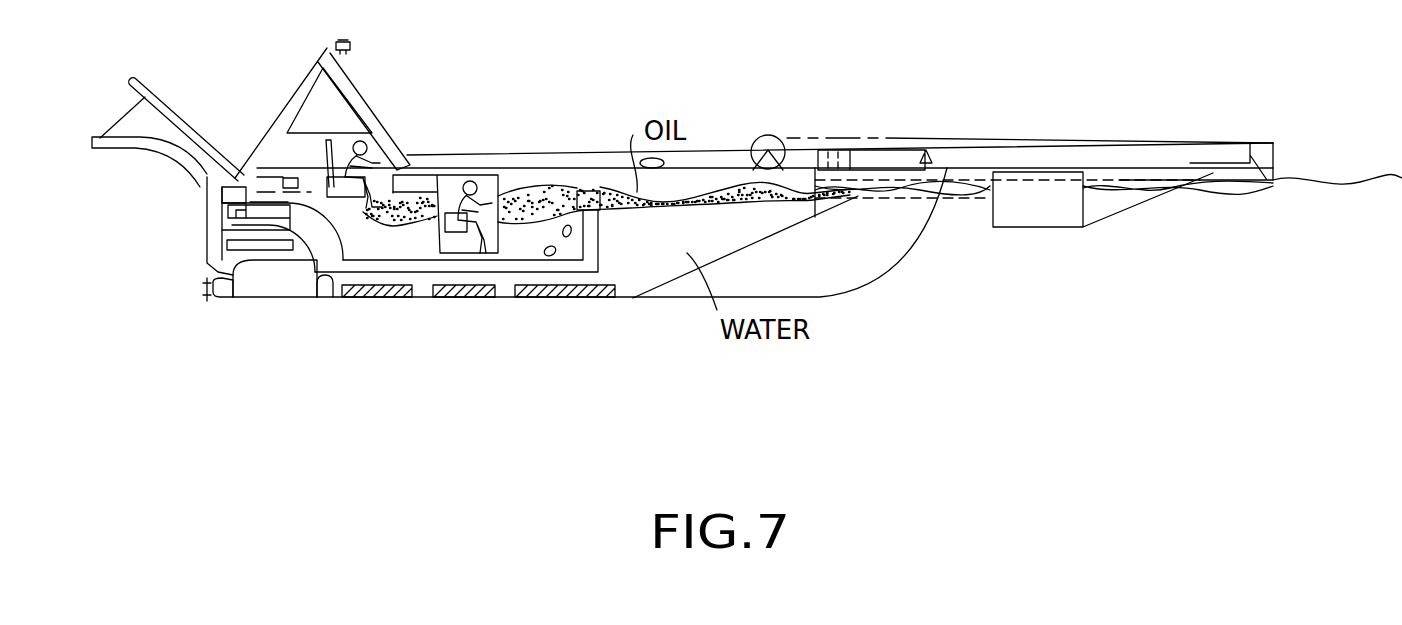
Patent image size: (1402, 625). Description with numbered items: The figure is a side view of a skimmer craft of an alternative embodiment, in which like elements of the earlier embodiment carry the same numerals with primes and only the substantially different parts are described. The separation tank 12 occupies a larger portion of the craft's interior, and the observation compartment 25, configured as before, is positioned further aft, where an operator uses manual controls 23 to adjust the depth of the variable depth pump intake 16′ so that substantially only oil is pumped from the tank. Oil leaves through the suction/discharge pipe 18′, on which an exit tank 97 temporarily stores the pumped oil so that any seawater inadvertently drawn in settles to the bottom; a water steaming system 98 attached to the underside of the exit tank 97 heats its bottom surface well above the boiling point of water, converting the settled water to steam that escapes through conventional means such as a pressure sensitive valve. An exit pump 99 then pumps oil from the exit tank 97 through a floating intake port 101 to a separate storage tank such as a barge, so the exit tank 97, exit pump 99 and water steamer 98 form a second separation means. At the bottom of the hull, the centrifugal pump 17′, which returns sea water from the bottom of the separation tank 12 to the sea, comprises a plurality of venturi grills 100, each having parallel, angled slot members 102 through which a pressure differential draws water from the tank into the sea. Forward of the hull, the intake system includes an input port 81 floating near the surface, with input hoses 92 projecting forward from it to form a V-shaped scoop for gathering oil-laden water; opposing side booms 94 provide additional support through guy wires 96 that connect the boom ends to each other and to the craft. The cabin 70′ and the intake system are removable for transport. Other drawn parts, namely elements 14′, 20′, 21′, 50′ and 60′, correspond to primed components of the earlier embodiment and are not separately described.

The separation tank 12 is at (768, 217).
The sensors 14′ is at (556, 253).
The variable depth pump intake 16′ is at (588, 190).
The centrifugal pump 17′ is at (586, 300).
The suction/discharge pipe 18′ is at (333, 298).
The operator compartment 20′ is at (450, 177).
The stern block 21′ is at (265, 280).
The manual controls 23 is at (208, 287).
The observation compartment 25 is at (525, 192).
The skimmer weir 50′ is at (828, 197).
The stern ramp 60′ is at (100, 137).
The cabin 70′ is at (358, 88).
The input port 81 is at (1083, 200).
The input hoses 92 is at (1190, 145).
The side booms 94 is at (770, 138).
The guy wires 96 is at (840, 137).
The exit tank 97 is at (212, 203).
The water steaming system 98 is at (204, 245).
The exit pump 99 is at (235, 177).
The venturi grills 100 is at (400, 302).
The floating intake port 101 is at (212, 230).
The slot members 102 is at (381, 299).